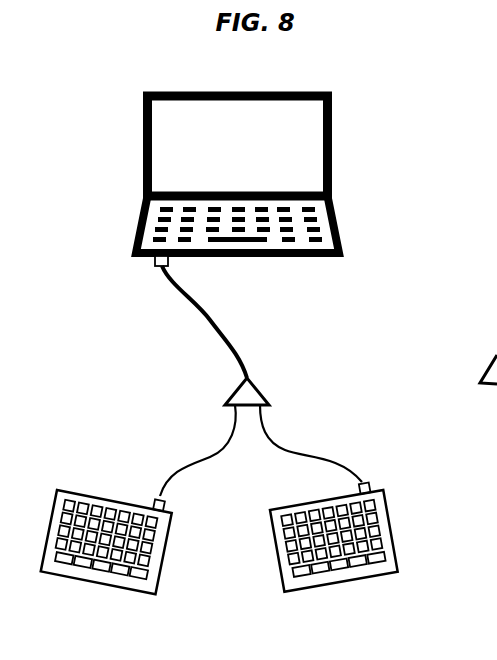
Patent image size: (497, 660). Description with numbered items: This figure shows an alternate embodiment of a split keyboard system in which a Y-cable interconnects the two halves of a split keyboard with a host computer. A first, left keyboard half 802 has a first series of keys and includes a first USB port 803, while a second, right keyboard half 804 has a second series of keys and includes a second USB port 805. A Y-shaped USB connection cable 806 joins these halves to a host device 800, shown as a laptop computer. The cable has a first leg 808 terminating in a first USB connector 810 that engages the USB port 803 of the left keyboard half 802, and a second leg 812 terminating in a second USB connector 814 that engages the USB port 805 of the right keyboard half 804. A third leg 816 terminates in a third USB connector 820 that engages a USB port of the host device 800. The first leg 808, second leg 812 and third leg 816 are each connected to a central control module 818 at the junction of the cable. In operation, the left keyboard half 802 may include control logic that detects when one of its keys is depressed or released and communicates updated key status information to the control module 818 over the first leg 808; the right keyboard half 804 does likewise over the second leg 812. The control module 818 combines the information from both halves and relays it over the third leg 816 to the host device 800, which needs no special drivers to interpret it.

The host device 800 is at (313, 93).
The first (left) keyboard half 802 is at (162, 573).
The first USB port 803 is at (144, 496).
The second (right) keyboard half 804 is at (395, 562).
The second USB port 805 is at (376, 479).
The Y-shaped USB connection cable 806 is at (276, 318).
The first leg 808 is at (200, 460).
The first USB connector 810 is at (168, 503).
The second leg 812 is at (277, 435).
The second USB connector 814 is at (357, 486).
The third leg 816 is at (203, 312).
The central control module 818 is at (255, 385).
The third USB connector 820 is at (157, 267).